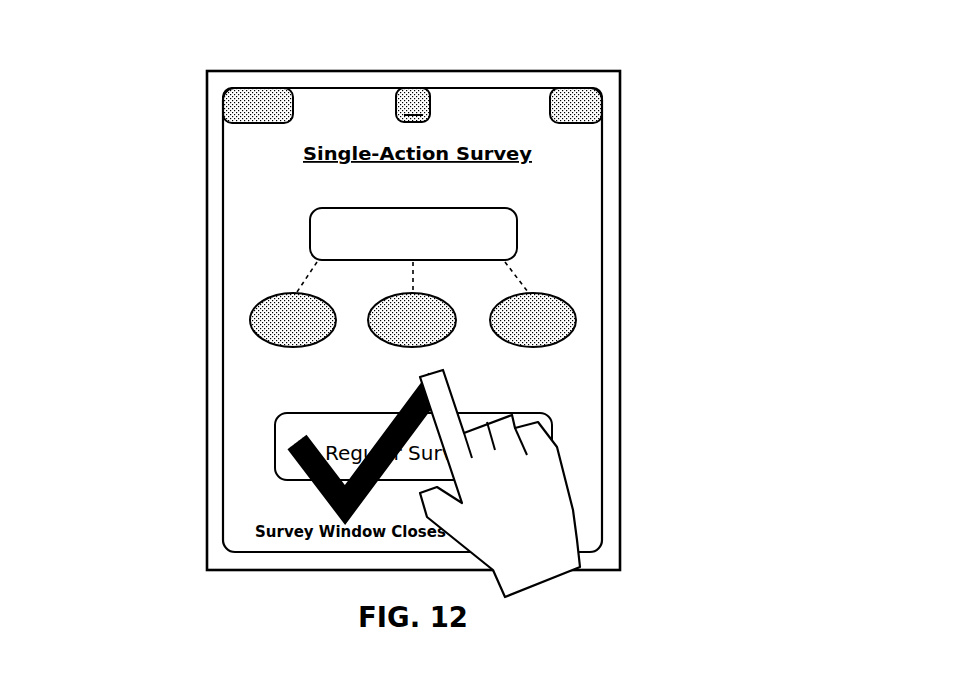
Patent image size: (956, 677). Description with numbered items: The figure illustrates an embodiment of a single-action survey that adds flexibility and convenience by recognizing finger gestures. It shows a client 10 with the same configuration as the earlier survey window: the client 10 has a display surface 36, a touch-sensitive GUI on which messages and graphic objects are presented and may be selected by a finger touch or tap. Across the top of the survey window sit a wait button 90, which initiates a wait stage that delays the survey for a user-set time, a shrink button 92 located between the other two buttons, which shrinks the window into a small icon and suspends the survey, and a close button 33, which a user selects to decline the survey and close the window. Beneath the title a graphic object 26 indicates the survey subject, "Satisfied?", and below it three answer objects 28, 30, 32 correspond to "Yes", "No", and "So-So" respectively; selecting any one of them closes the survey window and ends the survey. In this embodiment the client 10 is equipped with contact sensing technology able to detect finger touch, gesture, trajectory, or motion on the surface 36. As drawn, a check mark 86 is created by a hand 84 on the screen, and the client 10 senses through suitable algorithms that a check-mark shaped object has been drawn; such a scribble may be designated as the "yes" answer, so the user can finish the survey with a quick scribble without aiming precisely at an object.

The client system 10 is at (186, 67).
The display surface 36 is at (585, 398).
The wait button 90 is at (293, 106).
The shrink button 92 is at (430, 108).
The close button 33 is at (602, 100).
The graphic object 26 is at (421, 240).
The yes object 28 is at (290, 310).
The no object 30 is at (414, 310).
The so-so object 32 is at (538, 310).
The check mark 86 is at (418, 494).
The hand 84 is at (552, 540).